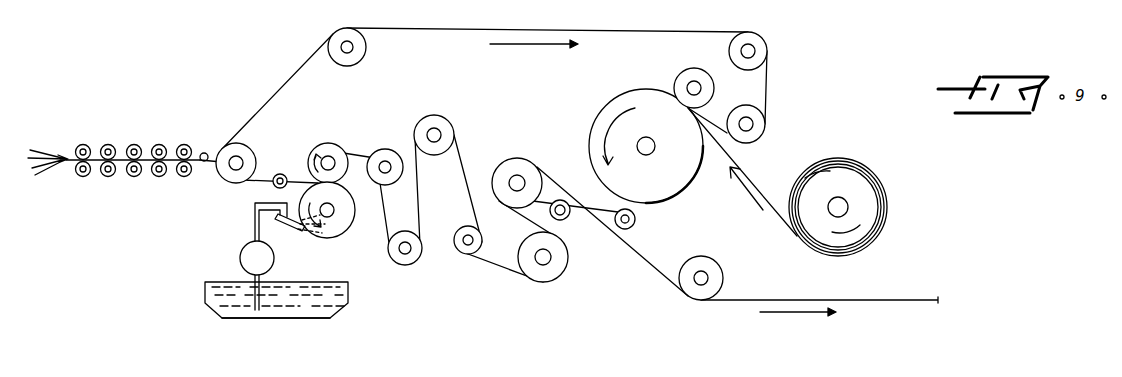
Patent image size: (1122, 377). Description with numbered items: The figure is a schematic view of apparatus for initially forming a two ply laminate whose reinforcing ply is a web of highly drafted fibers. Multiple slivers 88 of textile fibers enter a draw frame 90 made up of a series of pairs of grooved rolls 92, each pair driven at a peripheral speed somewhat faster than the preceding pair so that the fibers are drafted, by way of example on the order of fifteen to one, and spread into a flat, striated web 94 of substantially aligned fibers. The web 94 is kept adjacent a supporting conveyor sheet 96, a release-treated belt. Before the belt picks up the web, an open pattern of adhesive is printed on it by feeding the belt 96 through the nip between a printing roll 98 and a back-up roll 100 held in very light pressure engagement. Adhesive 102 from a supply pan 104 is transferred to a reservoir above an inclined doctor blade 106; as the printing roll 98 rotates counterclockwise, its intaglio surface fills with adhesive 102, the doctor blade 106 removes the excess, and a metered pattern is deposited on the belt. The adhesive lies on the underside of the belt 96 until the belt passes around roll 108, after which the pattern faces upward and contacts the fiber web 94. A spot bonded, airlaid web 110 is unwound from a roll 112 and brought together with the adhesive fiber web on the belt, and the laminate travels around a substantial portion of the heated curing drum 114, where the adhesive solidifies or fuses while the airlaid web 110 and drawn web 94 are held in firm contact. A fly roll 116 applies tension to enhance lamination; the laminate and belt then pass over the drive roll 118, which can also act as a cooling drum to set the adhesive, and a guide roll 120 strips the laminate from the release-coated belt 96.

The slivers 88 is at (63, 153).
The draw frame 90 is at (134, 142).
The grooved rolls 92 is at (184, 146).
The web 94 is at (197, 157).
The conveyor sheet 96 is at (241, 191).
The printing roll 98 is at (342, 238).
The back-up roll 100 is at (323, 148).
The adhesive 102 is at (337, 310).
The supply pan 104 is at (233, 320).
The doctor blade 106 is at (291, 235).
The roll 108 is at (250, 150).
The airlaid web 110 is at (757, 183).
The roll 112 is at (877, 195).
The curing drum 114 is at (625, 102).
The fly roll 116 is at (635, 221).
The drive roll 118 is at (537, 137).
The guide roll 120 is at (563, 220).